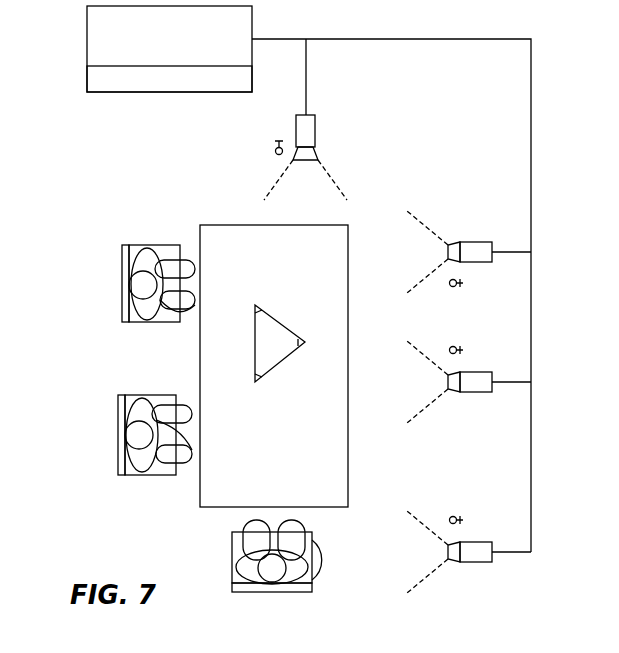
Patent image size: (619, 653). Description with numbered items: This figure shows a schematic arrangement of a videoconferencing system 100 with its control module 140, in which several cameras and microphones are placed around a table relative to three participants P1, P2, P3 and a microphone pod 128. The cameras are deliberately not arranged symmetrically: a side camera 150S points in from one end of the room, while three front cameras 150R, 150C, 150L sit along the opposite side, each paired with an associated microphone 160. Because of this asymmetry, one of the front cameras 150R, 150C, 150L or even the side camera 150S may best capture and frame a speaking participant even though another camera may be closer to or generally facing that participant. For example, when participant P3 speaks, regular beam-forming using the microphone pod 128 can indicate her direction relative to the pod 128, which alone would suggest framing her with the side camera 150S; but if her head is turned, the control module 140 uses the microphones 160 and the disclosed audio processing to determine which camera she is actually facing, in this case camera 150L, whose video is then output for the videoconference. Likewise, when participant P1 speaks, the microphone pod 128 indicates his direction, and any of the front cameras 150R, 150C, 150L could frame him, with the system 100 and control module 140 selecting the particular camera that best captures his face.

The videoconferencing system 100 is at (87, 14).
The control module 140 is at (87, 70).
The side camera 150S is at (318, 138).
The right front camera 150R is at (468, 241).
The center front camera 150C is at (462, 394).
The left front camera 150L is at (466, 564).
The microphone 160 is at (276, 144).
The microphone pod 128 is at (277, 372).
The participant P1 is at (122, 268).
The participant P2 is at (118, 420).
The participant P3 is at (272, 595).